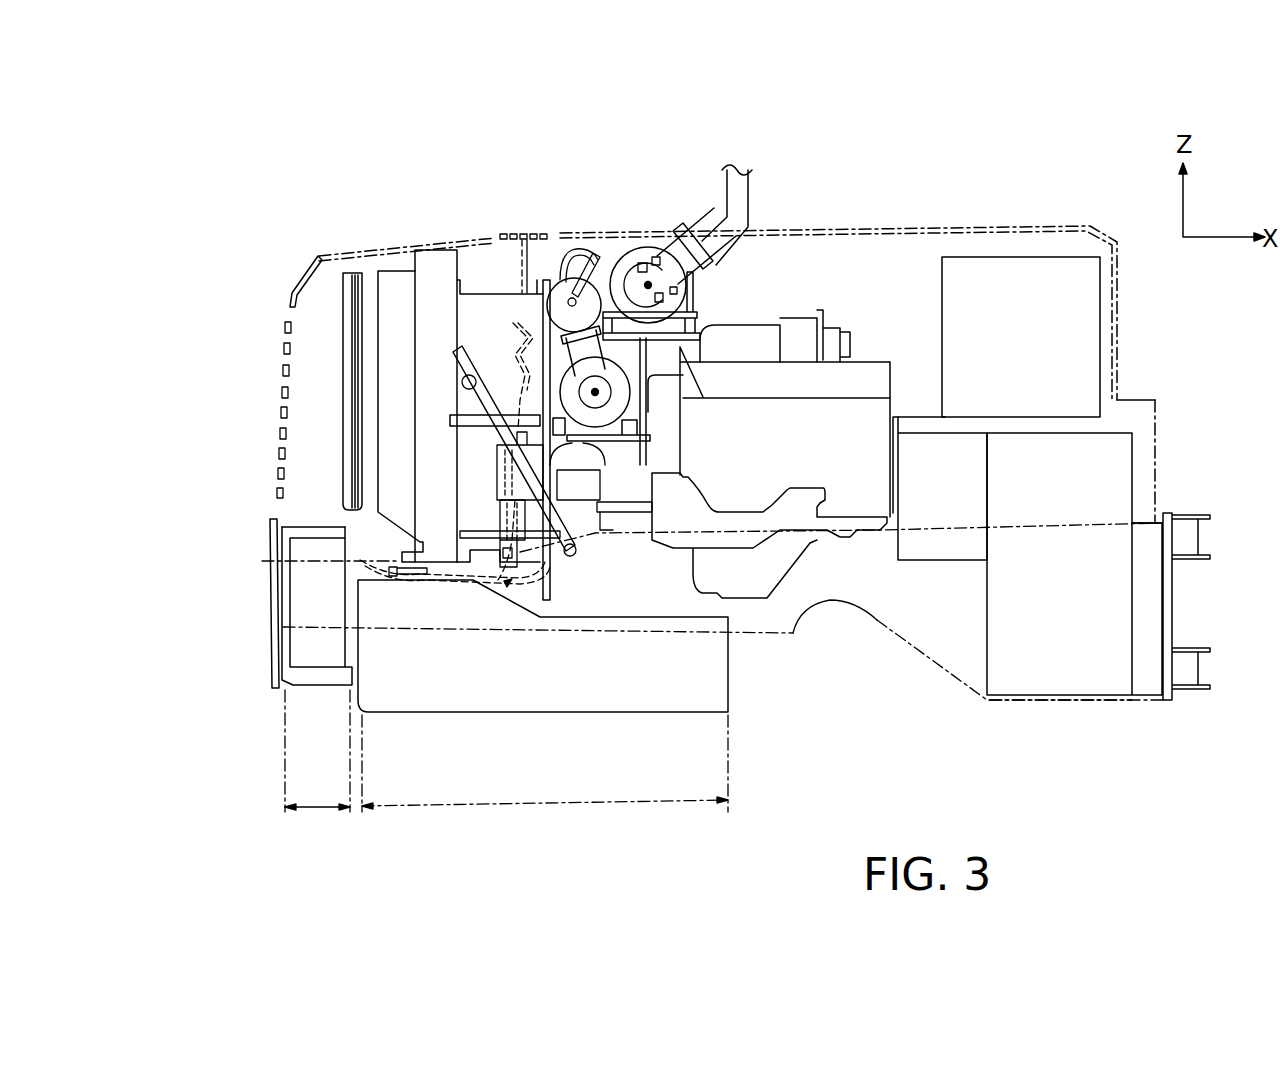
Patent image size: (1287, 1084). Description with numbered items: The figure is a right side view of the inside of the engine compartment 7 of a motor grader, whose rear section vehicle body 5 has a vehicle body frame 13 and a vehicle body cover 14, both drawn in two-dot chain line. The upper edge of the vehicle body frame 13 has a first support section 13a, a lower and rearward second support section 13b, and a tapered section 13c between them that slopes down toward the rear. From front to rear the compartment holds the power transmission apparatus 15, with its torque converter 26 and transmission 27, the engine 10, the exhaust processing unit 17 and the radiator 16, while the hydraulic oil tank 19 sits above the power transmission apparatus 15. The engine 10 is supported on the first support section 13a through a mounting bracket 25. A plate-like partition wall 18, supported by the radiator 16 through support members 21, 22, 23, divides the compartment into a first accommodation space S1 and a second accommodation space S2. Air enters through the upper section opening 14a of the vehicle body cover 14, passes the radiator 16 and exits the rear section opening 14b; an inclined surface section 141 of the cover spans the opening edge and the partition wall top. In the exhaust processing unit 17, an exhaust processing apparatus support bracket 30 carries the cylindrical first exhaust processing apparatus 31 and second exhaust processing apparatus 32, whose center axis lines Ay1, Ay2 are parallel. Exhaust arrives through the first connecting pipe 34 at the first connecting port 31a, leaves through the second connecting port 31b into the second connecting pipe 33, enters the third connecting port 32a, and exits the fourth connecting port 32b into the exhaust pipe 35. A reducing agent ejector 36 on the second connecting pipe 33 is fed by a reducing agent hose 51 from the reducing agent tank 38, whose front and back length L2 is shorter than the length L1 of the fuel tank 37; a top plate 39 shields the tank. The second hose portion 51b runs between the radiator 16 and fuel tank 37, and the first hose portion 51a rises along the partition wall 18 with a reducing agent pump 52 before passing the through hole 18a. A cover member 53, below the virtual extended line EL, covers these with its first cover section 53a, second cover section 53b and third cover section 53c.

The rear section vehicle body 5 is at (858, 190).
The engine compartment 7 is at (928, 259).
The engine 10 is at (890, 412).
The vehicle body frame 13 is at (913, 650).
The first support section 13a is at (1141, 524).
The second support section 13b is at (270, 533).
The tapered section 13c is at (493, 557).
The vehicle body cover 14 is at (908, 228).
The upper section opening 14a is at (525, 229).
The rear section opening 14b is at (277, 364).
The inclined surface section 141 is at (546, 232).
The power transmission apparatus 15 is at (1007, 423).
The radiator 16 is at (437, 253).
The exhaust processing unit 17 is at (633, 256).
The partition wall 18 is at (550, 470).
The through hole 18a is at (345, 274).
The hydraulic oil tank 19 is at (1100, 328).
The support member 21 is at (480, 294).
The support member 22 is at (448, 420).
The support member 23 is at (530, 545).
The mounting bracket 25 is at (800, 513).
The torque converter 26 is at (938, 550).
The transmission 27 is at (1050, 692).
The exhaust processing apparatus support bracket 30 is at (890, 364).
The first exhaust processing apparatus 31 is at (603, 414).
The first connecting port 31a is at (747, 335).
The second connecting port 31b is at (593, 352).
The second exhaust processing apparatus 32 is at (641, 247).
The third connecting port 32a is at (604, 258).
The fourth connecting port 32b is at (690, 258).
The second connecting pipe 33 is at (501, 351).
The first connecting pipe 34 is at (753, 302).
The exhaust pipe 35 is at (748, 188).
The reducing agent ejector 36 is at (545, 300).
The fuel tank 37 is at (723, 667).
The reducing agent tank 38 is at (313, 643).
The top plate 39 is at (313, 557).
The reducing agent hose 51 is at (517, 580).
The first hose portion 51a is at (515, 405).
The second hose portion 51b is at (400, 578).
The reducing agent pump 52 is at (515, 467).
The cover member 53 is at (500, 358).
The first cover section 53a is at (467, 375).
The second cover section 53b is at (545, 485).
The third cover section 53c is at (566, 557).
The first accommodation space S1 is at (932, 337).
The second accommodation space S2 is at (522, 282).
The virtual extended line EL is at (540, 333).
The center axis line Ay1 is at (596, 396).
The center axis line Ay2 is at (651, 281).
The front and back length L1 is at (545, 779).
The front and back length L2 is at (317, 767).